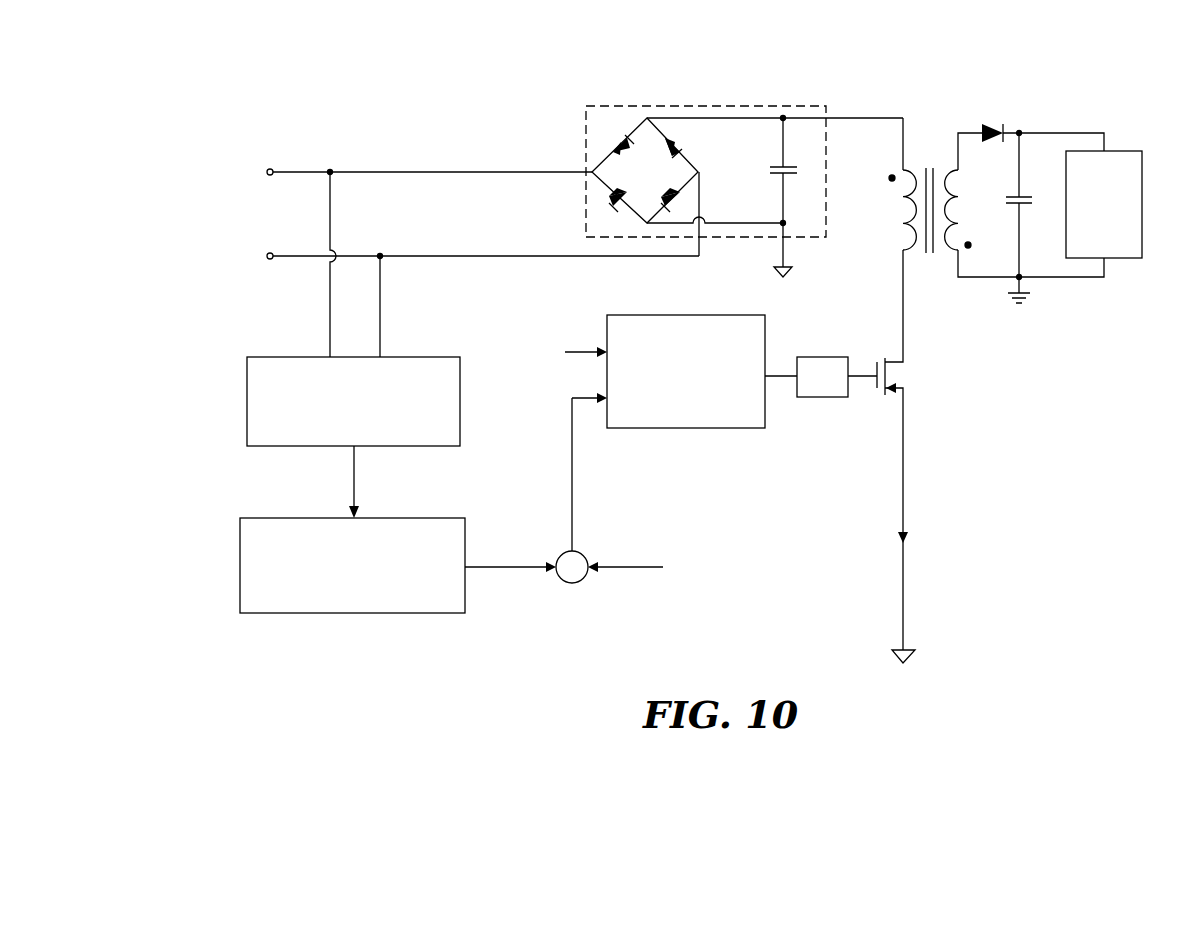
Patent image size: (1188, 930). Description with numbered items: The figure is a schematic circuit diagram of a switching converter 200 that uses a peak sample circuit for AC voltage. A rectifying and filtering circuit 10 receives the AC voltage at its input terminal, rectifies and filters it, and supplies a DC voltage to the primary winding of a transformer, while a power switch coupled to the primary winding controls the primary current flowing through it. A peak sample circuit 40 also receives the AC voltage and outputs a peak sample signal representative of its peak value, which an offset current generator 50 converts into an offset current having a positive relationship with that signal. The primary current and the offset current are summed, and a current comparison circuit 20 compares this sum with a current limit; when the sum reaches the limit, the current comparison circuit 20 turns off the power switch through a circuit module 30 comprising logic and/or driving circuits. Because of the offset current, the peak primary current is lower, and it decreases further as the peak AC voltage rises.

The switching converter 200 is at (1128, 67).
The rectifying and filtering circuit 10 is at (590, 105).
The current comparison circuit 20 is at (620, 315).
The circuit module 30 is at (821, 377).
The peak sample circuit 40 is at (295, 357).
The offset current generator 50 is at (298, 517).